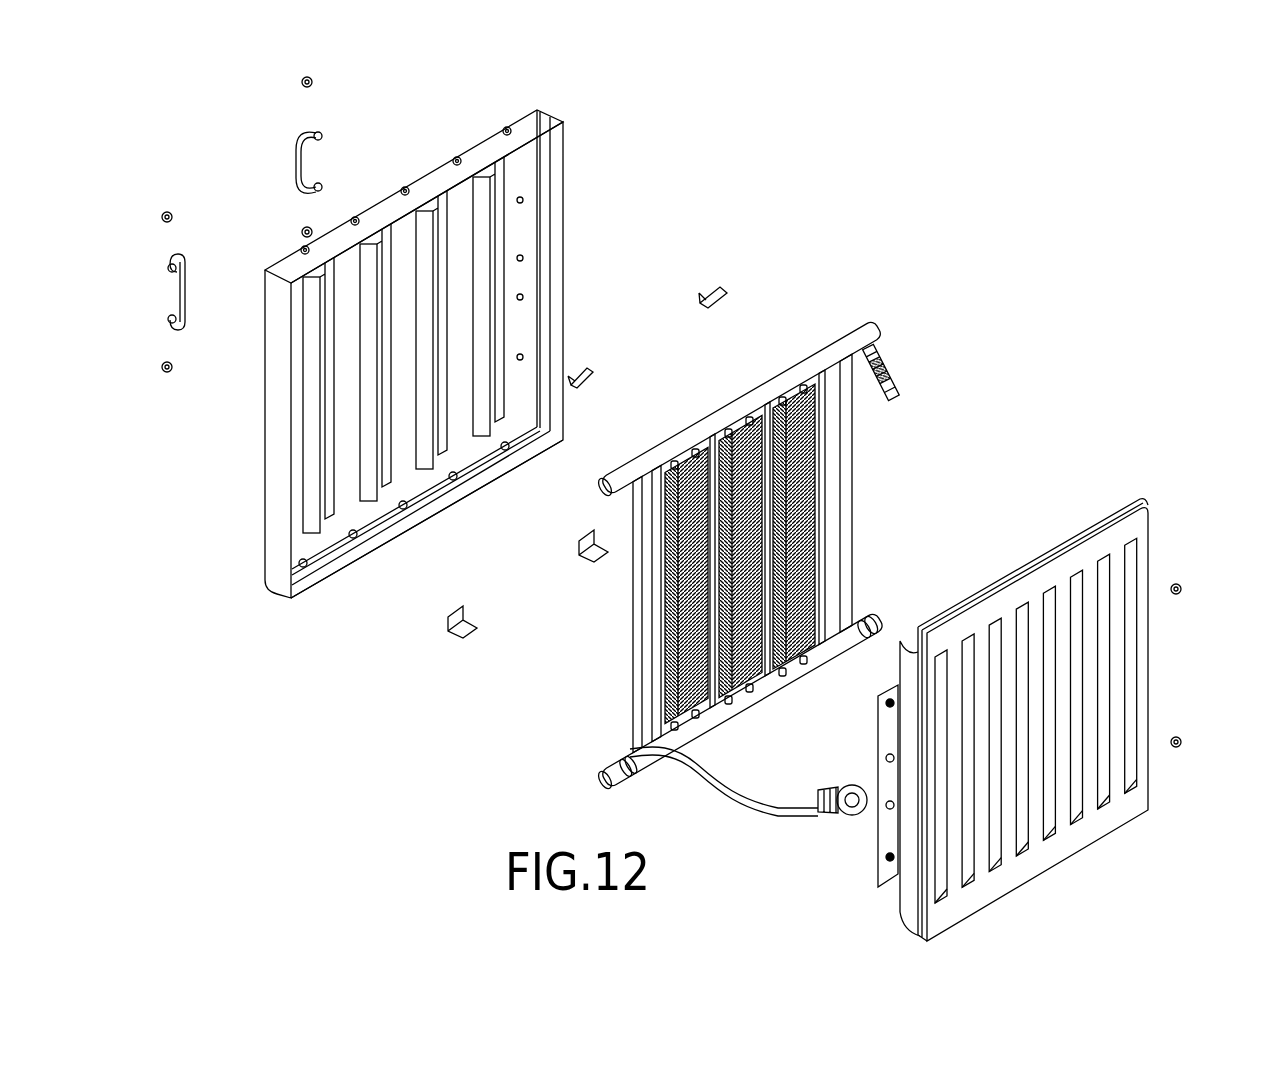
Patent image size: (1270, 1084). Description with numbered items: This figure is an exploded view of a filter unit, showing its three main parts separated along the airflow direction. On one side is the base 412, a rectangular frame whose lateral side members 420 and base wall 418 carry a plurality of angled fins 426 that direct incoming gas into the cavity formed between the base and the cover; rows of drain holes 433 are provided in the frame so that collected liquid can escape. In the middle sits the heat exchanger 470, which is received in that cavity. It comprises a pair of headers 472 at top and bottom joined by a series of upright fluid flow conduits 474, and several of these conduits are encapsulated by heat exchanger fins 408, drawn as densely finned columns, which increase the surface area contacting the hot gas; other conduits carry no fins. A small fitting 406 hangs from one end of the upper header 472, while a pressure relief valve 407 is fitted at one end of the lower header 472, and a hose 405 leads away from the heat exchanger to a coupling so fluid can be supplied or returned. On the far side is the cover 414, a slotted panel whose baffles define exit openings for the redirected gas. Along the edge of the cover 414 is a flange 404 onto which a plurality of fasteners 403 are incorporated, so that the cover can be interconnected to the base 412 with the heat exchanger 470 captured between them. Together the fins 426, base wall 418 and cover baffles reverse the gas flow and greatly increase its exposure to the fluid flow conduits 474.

The base 412 is at (448, 342).
The lateral side member 420 is at (528, 126).
The base wall 418 is at (530, 226).
The drain hole 433 is at (456, 162).
The fin 426 is at (313, 527).
The heat exchanger 470 is at (797, 554).
The header 472 is at (820, 352).
The fluid flow conduit 474 is at (856, 510).
The heat exchanger fin 408 is at (668, 632).
The fitting 406 is at (902, 384).
The pressure relief valve 407 is at (880, 608).
The hose 405 is at (748, 787).
The flange 404 is at (885, 822).
The cover 414 is at (1027, 674).
The fastener 403 is at (893, 860).